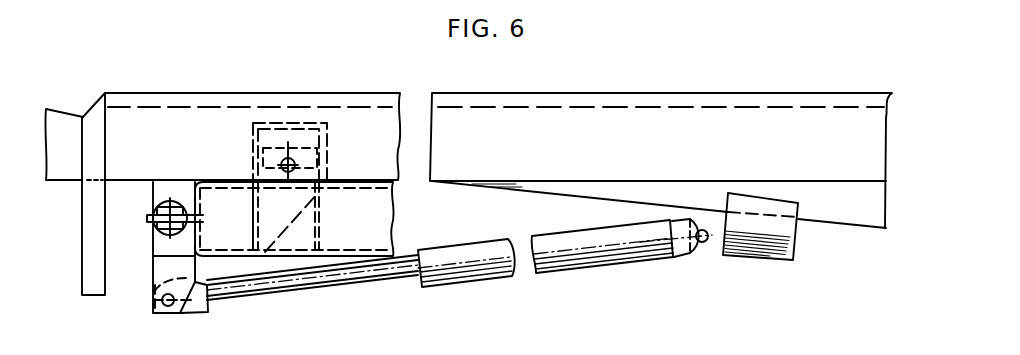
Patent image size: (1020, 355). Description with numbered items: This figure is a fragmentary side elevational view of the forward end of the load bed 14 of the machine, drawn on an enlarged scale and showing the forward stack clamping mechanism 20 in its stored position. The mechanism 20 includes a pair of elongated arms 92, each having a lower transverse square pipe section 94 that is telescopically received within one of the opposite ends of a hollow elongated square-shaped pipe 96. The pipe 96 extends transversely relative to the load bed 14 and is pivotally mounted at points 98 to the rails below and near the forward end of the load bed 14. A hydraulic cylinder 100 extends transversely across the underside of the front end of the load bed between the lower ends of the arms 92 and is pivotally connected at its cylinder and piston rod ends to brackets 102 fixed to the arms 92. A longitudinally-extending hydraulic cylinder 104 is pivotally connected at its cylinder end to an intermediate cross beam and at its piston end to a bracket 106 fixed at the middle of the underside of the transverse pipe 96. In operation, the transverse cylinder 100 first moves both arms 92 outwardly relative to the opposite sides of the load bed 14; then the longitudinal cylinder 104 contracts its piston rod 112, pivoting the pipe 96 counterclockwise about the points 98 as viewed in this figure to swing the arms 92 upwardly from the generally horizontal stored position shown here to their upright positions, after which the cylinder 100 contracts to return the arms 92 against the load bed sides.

The load bed 14 is at (627, 93).
The stack clamping mechanism 20 is at (459, 273).
The elongated arms 92 is at (391, 203).
The lower transverse square pipe section 94 is at (240, 243).
The hollow elongated square-shaped pipe 96 is at (187, 183).
The pivot points 98 is at (309, 154).
The hydraulic cylinder 100 is at (166, 203).
The brackets 102 is at (150, 218).
The longitudinally-extending hydraulic cylinder 104 is at (588, 258).
The bracket 106 is at (153, 280).
The piston rod 112 is at (314, 286).